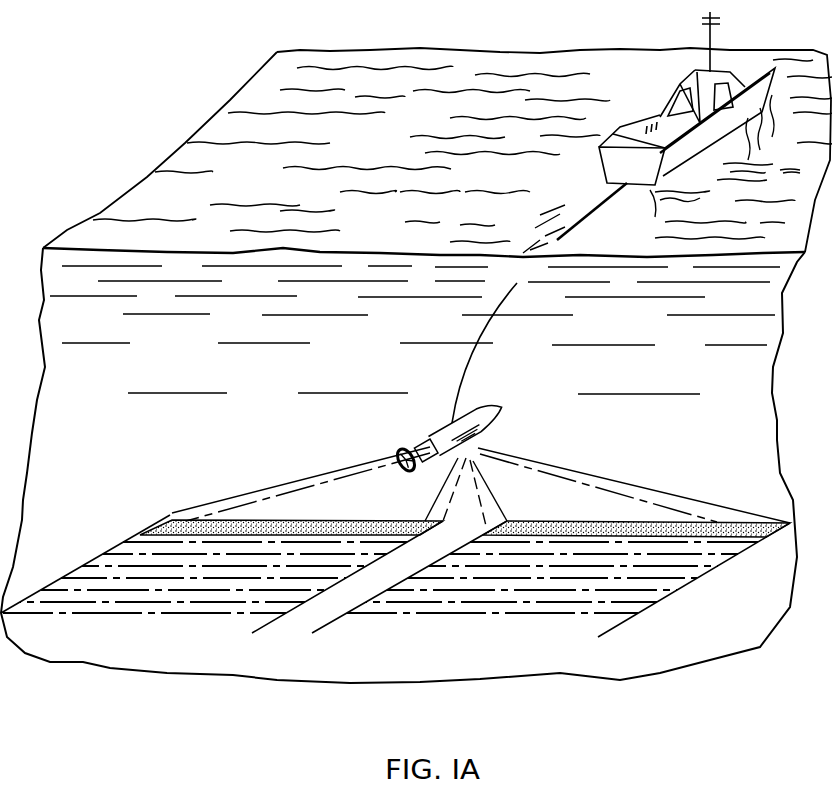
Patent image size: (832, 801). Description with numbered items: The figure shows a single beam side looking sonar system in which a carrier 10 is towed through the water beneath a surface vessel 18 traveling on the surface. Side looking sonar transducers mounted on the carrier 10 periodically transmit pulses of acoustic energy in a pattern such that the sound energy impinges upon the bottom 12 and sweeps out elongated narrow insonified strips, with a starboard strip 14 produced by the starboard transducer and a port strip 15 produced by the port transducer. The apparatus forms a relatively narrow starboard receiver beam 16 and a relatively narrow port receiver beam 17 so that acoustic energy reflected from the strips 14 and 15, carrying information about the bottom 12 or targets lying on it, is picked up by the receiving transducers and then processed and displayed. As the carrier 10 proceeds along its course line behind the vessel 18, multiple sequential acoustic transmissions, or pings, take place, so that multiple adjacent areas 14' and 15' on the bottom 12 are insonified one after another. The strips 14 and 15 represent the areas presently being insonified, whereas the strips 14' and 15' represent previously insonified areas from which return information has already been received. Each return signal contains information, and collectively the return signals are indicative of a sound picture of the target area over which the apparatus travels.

The carrier 10 is at (440, 433).
The bottom 12 is at (285, 664).
The starboard insonified strip 14 is at (636, 516).
The previously insonified starboard areas 14' is at (694, 580).
The port insonified strip 15 is at (291, 514).
The previously insonified port areas 15' is at (85, 564).
The starboard receiver beam 16 is at (663, 497).
The port receiver beam 17 is at (301, 493).
The surface vessel 18 is at (695, 80).